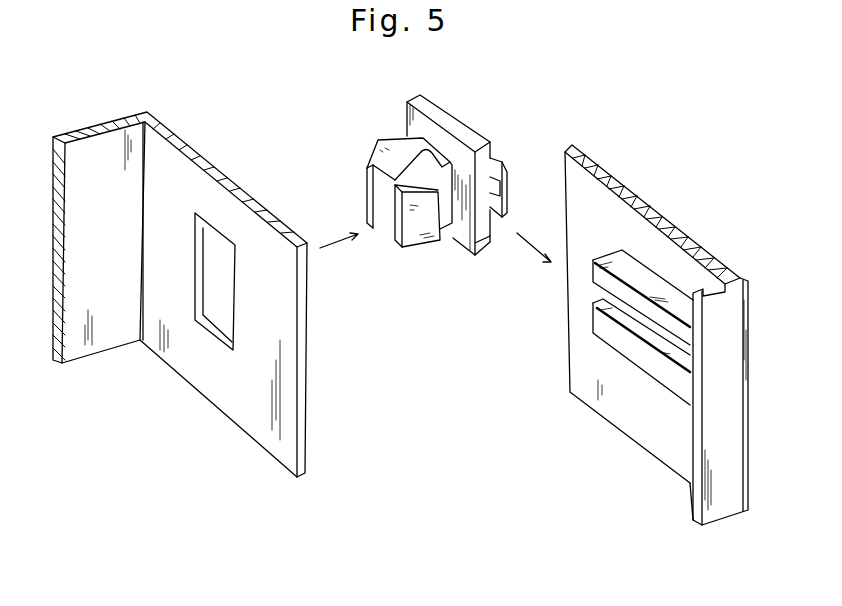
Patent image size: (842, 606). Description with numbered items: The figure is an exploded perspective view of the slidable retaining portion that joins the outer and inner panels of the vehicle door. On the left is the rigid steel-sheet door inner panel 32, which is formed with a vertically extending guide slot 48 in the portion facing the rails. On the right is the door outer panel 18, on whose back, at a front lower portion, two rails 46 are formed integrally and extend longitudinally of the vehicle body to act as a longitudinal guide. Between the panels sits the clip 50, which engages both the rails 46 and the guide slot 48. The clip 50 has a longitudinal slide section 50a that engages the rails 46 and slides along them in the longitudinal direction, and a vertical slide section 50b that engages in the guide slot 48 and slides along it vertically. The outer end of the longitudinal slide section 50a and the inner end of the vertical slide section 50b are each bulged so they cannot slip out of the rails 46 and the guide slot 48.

The door outer panel 18 is at (635, 225).
The door inner panel 32 is at (163, 173).
The rails 46 is at (602, 280).
The guide slot 48 is at (218, 288).
The clip 50 is at (393, 123).
The longitudinal slide section 50a is at (500, 195).
The vertical slide section 50b is at (447, 213).